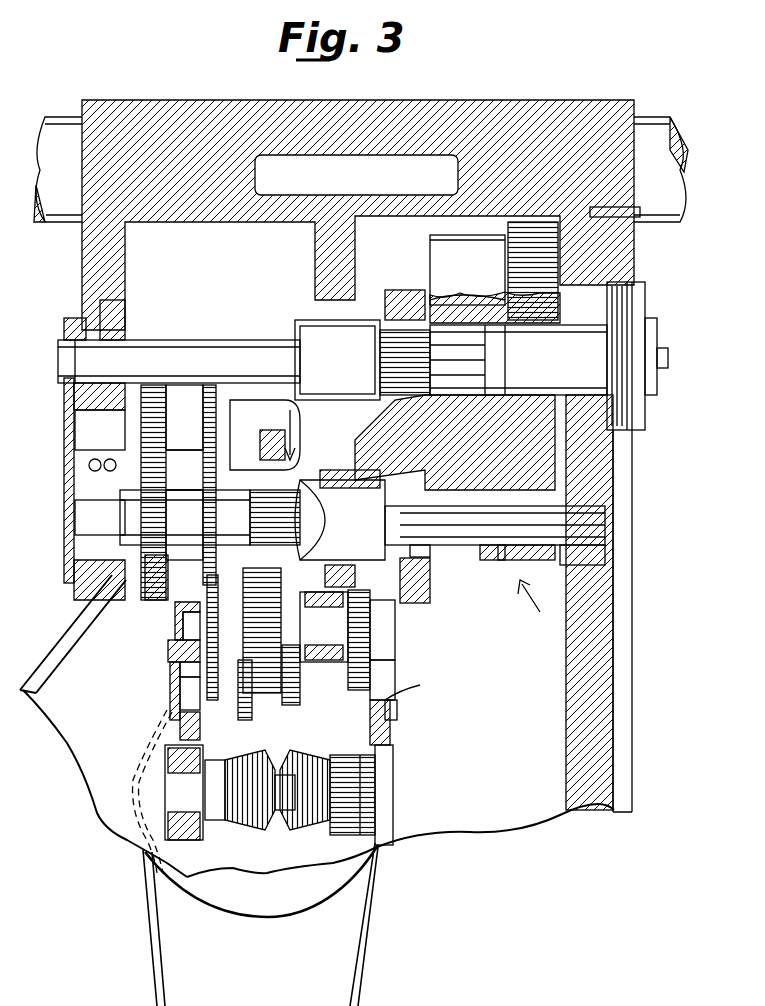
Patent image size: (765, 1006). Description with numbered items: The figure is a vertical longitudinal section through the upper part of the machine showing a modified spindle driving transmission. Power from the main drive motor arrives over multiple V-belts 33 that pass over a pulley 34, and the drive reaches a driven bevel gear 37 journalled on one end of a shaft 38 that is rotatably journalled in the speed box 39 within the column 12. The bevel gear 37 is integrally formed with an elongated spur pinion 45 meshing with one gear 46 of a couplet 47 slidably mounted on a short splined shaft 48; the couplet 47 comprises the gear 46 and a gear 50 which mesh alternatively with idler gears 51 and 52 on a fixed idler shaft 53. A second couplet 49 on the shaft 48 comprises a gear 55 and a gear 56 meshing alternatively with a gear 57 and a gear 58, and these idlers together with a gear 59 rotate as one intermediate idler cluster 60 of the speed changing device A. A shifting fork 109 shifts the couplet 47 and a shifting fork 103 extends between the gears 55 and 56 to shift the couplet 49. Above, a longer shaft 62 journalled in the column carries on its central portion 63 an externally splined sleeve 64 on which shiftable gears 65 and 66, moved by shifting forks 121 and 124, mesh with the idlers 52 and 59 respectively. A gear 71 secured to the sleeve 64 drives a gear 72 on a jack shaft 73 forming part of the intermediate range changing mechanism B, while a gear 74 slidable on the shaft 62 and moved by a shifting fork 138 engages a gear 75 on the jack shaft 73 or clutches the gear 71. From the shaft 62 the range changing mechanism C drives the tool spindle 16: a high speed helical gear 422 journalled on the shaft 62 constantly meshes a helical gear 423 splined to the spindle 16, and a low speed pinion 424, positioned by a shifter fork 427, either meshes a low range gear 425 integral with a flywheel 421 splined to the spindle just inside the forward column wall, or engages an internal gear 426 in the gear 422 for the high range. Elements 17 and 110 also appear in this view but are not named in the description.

The column 12 is at (508, 100).
The shaft 17 is at (650, 120).
The tool spindle 16 is at (655, 335).
The low range gear 425 is at (525, 222).
The flywheel 421 is at (455, 252).
The helical gear 423 is at (402, 290).
The gear 75 is at (155, 400).
The jack shaft 73 is at (185, 410).
The gear 72 is at (216, 405).
The gear 71 is at (195, 495).
The shifting fork 121 is at (270, 450).
The speed changing device A is at (287, 424).
The intermediate range changing mechanism B is at (110, 445).
The shiftable gear 65 is at (345, 478).
The support plate 110 is at (75, 470).
The shifting fork 138 is at (85, 585).
The externally splined sleeve 64 is at (242, 500).
The shifting fork 124 is at (322, 505).
The drive shaft 62 is at (610, 516).
The internal gear 426 is at (452, 552).
The high speed driving helical gear 422 is at (450, 575).
The low speed driving pinion 424 is at (530, 555).
The shifter fork 427 is at (502, 562).
The range changing mechanism C is at (537, 604).
The gear 74 is at (148, 575).
The intermediate idler cluster 60 is at (226, 602).
The shiftable gear 66 is at (243, 583).
The central portion 63 is at (340, 588).
The idler gear 52 is at (324, 627).
The idler shaft 53 is at (380, 622).
The idler gear 51 is at (398, 650).
The gear couplet 47 is at (398, 672).
The shifting fork 109 is at (418, 681).
The gear 50 is at (398, 708).
The gear 46 is at (395, 736).
The gear 58 is at (190, 625).
The gear 59 is at (240, 672).
The gear 57 is at (282, 684).
The speed box 39 is at (158, 660).
The second gear couplet 49 is at (175, 685).
The splined shaft 48 is at (180, 702).
The gear 56 is at (172, 712).
The shifting fork 103 is at (190, 745).
The gear 55 is at (270, 745).
The shaft 38 is at (395, 790).
The driven bevel gear 37 is at (342, 835).
The spur pinion 45 is at (340, 835).
The pulley 34 is at (243, 902).
The V-belts 33 is at (148, 970).